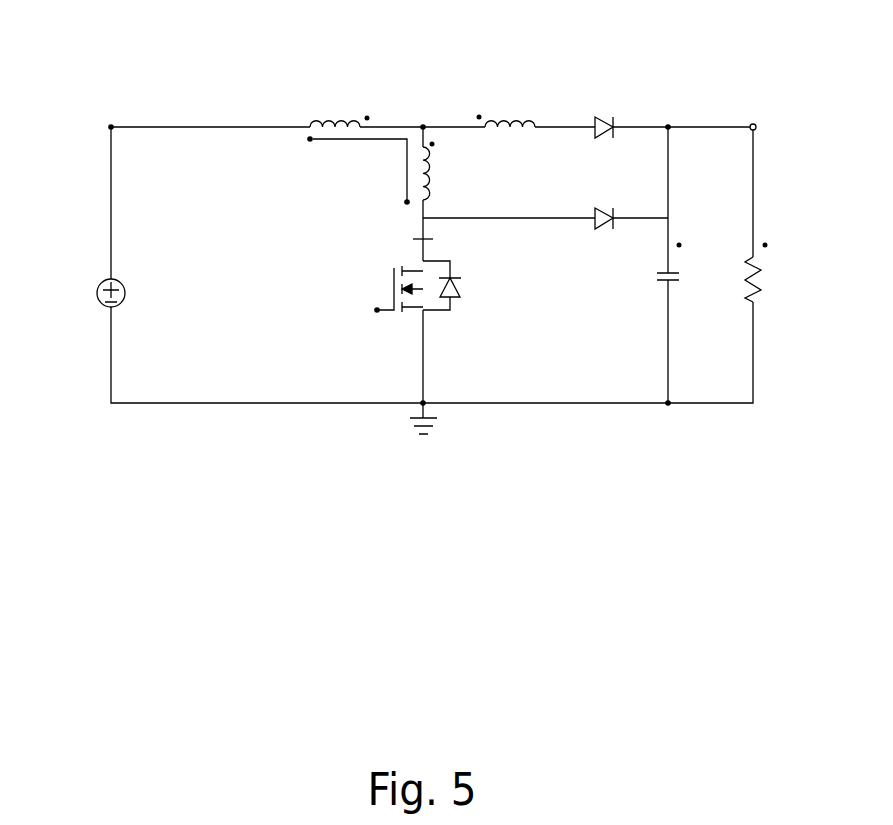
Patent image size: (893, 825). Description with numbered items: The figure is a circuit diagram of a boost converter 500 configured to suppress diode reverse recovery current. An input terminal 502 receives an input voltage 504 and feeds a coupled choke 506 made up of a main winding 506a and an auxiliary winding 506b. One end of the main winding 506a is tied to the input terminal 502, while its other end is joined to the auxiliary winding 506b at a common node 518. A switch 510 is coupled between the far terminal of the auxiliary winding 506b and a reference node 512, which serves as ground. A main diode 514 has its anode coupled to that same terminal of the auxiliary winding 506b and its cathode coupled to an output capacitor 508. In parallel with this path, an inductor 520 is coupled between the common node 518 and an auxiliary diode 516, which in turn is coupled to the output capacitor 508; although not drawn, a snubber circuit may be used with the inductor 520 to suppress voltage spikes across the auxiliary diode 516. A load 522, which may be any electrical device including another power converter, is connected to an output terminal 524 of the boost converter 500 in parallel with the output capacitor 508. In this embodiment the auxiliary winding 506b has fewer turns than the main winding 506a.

The boost converter 500 is at (160, 73).
The input terminal 502 is at (111, 126).
The input voltage 504 is at (97, 293).
The coupled choke 506 is at (378, 140).
The main winding 506a is at (330, 119).
The auxiliary winding 506b is at (432, 170).
The output capacitor 508 is at (657, 283).
The switch 510 is at (413, 307).
The reference node 512 is at (423, 436).
The main diode 514 is at (603, 230).
The auxiliary diode 516 is at (603, 118).
The common node 518 is at (423, 126).
The inductor 520 is at (503, 119).
The load 522 is at (758, 278).
The output terminal 524 is at (753, 126).